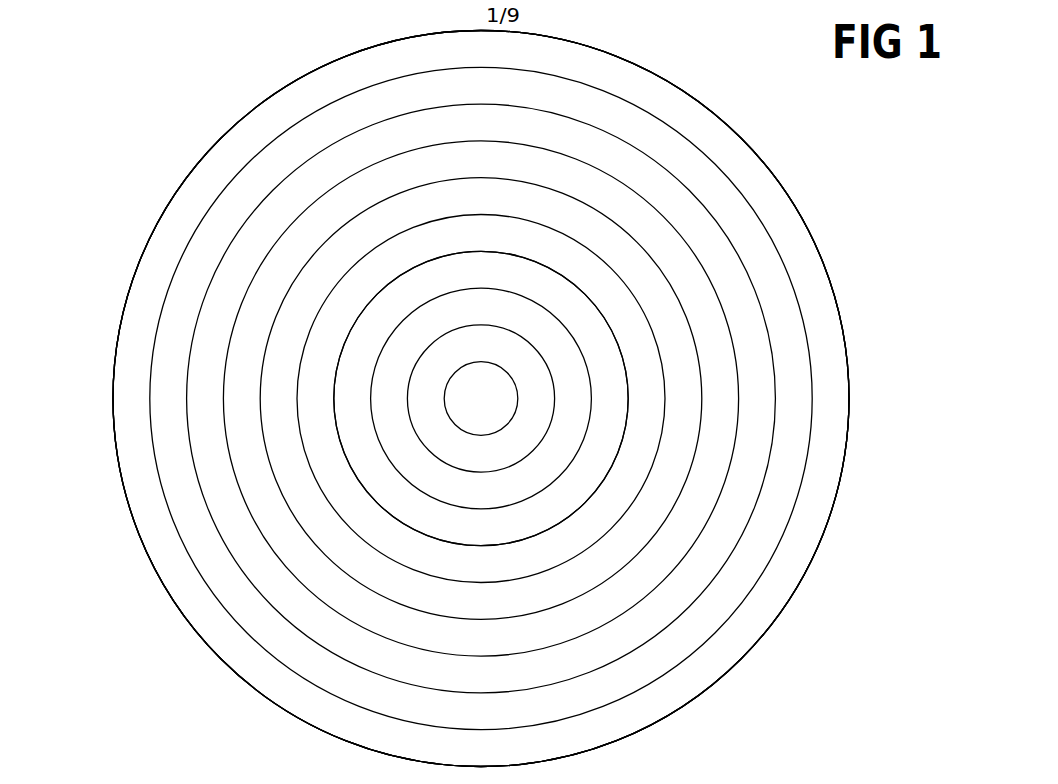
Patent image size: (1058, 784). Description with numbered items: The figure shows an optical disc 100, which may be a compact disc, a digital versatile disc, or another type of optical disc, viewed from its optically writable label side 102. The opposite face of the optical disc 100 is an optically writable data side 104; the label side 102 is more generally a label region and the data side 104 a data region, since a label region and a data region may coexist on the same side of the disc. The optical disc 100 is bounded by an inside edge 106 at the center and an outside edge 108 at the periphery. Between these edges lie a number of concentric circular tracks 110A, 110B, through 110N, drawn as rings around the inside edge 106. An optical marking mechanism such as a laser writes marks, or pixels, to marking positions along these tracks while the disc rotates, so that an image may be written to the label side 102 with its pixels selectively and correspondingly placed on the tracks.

The optical disc 100 is at (110, 100).
The optically writable label side 102 is at (360, 63).
The optically writable data side 104 is at (820, 603).
The inside edge 106 is at (511, 383).
The outside edge 108 is at (850, 408).
The concentric circular track 110A is at (509, 286).
The concentric circular track 110B is at (509, 246).
The concentric circular track 110N is at (511, 99).